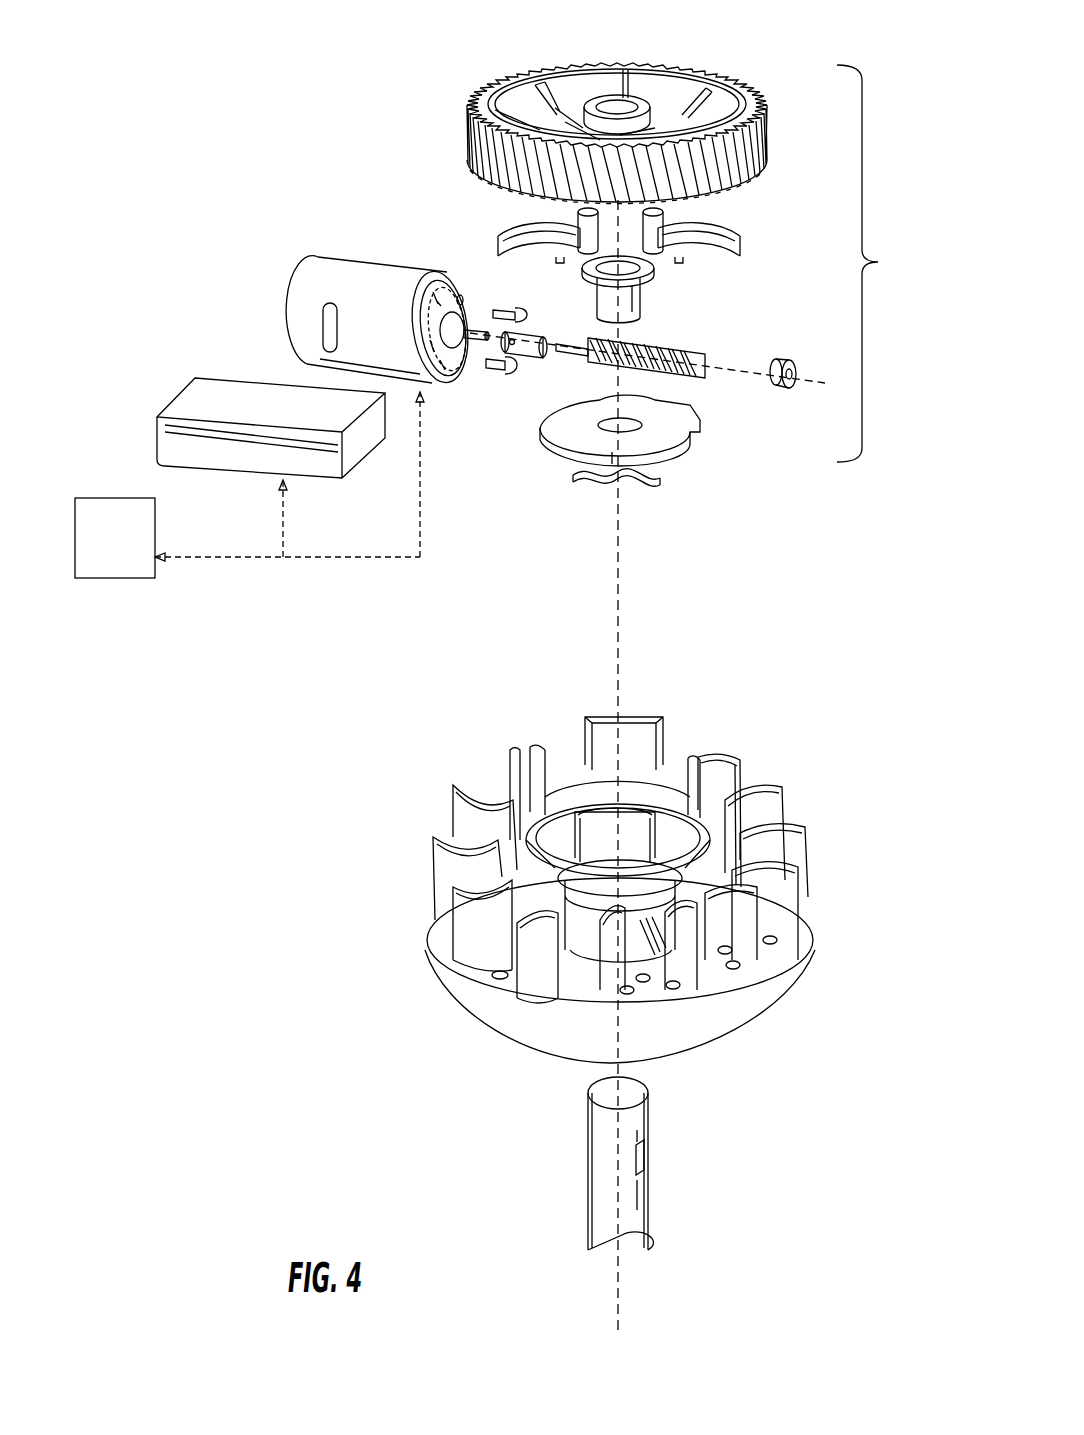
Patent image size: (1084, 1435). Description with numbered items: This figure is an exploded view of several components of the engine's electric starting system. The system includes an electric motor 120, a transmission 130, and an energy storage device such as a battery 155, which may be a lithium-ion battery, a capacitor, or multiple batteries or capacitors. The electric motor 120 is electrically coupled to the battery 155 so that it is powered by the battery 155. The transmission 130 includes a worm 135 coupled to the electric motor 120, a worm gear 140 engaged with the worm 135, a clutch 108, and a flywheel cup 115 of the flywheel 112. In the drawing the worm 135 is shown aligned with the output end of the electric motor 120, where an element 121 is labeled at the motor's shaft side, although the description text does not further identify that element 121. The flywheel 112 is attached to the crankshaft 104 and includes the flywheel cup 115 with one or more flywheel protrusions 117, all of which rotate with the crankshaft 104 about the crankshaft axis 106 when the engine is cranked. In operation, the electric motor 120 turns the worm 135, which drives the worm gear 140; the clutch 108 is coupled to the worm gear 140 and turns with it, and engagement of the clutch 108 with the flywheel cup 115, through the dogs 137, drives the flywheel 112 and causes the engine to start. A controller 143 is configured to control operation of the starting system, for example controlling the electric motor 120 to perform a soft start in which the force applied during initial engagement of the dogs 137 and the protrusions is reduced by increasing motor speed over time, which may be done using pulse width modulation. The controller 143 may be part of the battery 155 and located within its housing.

The crankshaft 104 is at (648, 1200).
The crankshaft axis 106 is at (617, 1296).
The clutch 108 is at (681, 458).
The flywheel 112 is at (430, 920).
The flywheel cup 115 is at (585, 785).
The flywheel protrusions 117 is at (635, 727).
The electric motor 120 is at (350, 265).
The motor shaft 121 is at (473, 342).
The transmission 130 is at (880, 263).
The worm 135 is at (677, 347).
The dogs 137 is at (500, 243).
The worm gear 140 is at (658, 60).
The controller 143 is at (113, 563).
The battery 155 is at (207, 385).